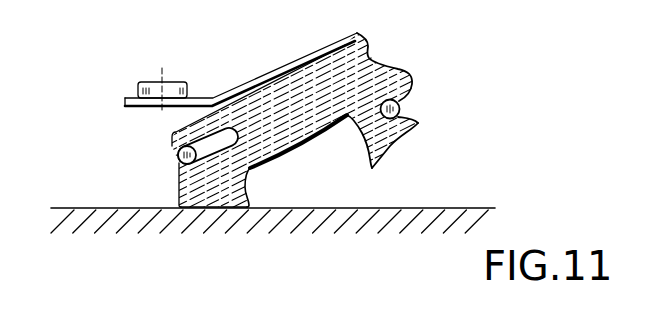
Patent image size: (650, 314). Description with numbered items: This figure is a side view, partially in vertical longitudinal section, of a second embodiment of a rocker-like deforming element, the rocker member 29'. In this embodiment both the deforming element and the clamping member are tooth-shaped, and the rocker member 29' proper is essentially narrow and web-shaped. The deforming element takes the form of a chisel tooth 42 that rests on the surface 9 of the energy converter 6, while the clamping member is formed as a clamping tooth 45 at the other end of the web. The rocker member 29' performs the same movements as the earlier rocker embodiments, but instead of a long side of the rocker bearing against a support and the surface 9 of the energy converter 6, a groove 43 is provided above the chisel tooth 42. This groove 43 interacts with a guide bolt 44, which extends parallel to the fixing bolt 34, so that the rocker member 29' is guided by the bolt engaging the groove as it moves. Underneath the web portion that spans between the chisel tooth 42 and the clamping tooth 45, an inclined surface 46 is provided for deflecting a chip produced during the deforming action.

The rocker member 29' is at (241, 59).
The fixing bolt 34 is at (398, 102).
The energy converter 6 is at (477, 204).
The surface 9 is at (74, 205).
The guide bolt 44 is at (177, 153).
The groove 43 is at (295, 157).
The inclined surface 46 is at (258, 163).
The clamping tooth 45 is at (372, 168).
The chisel tooth 42 is at (255, 214).